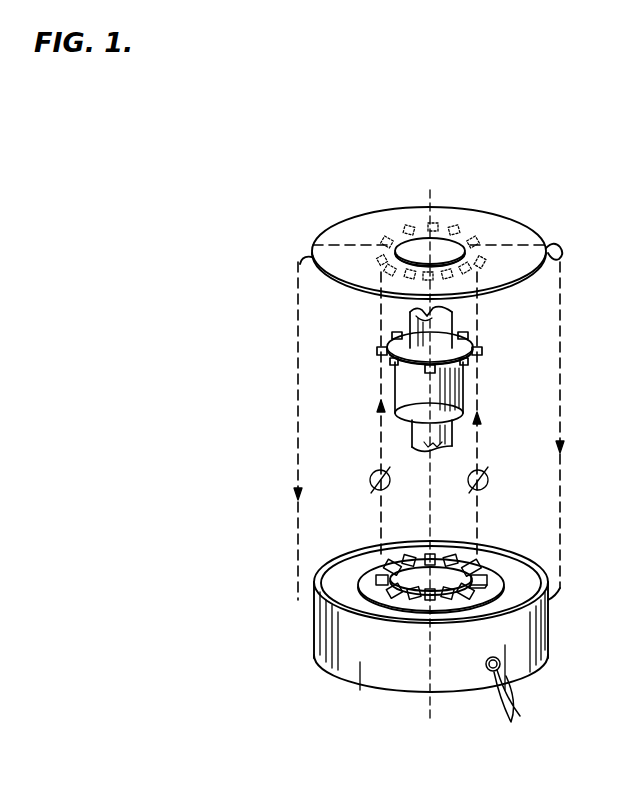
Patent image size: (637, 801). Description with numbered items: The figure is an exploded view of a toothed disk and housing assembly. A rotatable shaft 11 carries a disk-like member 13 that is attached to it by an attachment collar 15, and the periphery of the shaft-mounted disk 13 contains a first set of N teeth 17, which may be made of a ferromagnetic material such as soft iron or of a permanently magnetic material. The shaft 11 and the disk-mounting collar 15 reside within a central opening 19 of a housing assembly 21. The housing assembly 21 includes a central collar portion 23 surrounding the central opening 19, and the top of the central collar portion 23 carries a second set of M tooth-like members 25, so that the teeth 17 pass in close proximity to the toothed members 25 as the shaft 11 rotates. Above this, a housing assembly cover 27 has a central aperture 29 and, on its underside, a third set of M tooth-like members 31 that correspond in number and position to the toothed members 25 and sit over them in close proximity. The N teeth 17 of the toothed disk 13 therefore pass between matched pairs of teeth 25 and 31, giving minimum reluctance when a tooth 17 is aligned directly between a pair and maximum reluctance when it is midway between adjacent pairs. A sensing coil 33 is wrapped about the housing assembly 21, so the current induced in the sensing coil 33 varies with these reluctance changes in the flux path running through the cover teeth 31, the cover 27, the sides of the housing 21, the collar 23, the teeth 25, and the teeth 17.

The rotatable shaft 11 is at (455, 432).
The disk-like member 13 is at (424, 377).
The attachment collar 15 is at (465, 388).
The first set of N teeth 17 is at (378, 350).
The central opening 19 is at (447, 582).
The housing assembly 21 is at (458, 618).
The central collar portion 23 is at (490, 582).
The second set of M tooth-like members 25 is at (428, 598).
The housing assembly cover 27 is at (560, 258).
The central aperture 29 is at (449, 258).
The third set of M tooth-like members 31 is at (390, 258).
The sensing coil 33 is at (503, 710).